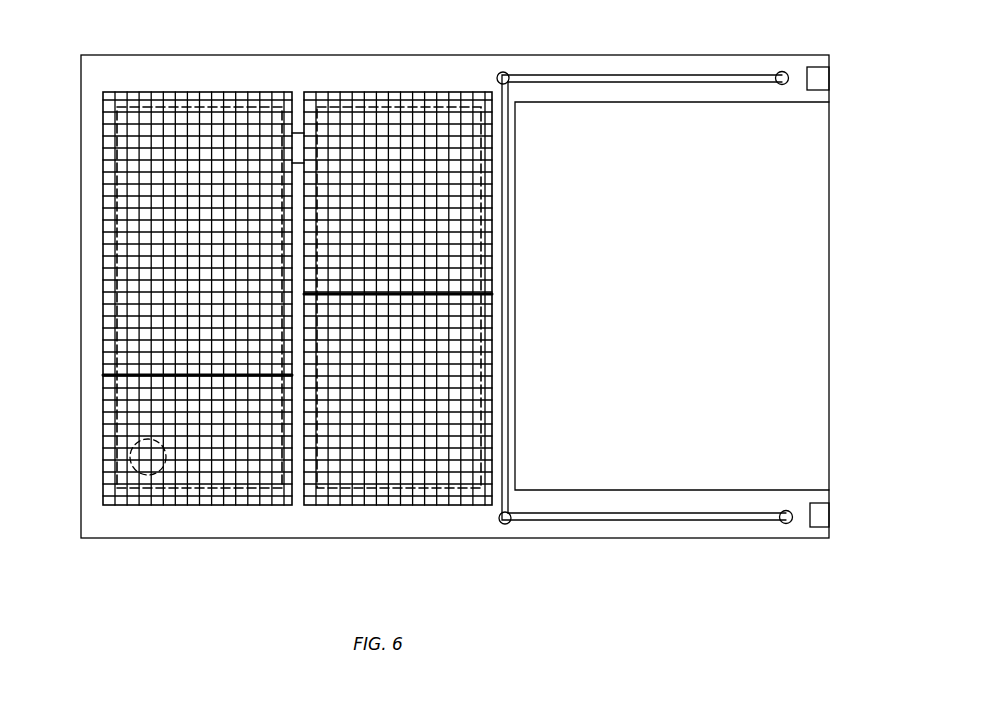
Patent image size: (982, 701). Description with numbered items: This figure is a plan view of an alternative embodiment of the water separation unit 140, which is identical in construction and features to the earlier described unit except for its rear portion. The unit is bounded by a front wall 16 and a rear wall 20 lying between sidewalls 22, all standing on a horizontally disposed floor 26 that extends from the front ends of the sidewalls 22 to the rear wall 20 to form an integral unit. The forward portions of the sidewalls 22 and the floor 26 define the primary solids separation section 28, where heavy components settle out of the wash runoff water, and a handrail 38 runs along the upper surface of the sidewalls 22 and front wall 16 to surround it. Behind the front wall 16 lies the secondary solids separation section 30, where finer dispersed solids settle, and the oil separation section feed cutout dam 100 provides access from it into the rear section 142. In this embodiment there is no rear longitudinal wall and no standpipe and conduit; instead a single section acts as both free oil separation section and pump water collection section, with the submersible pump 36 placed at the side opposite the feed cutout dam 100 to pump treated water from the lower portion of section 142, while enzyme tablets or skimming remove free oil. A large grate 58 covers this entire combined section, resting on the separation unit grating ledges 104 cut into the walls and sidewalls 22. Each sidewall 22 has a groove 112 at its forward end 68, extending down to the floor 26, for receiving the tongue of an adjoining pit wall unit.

The front wall 16 is at (515, 192).
The rear wall 20 is at (80, 300).
The sidewalls 22 is at (205, 68).
The floor 26 is at (827, 82).
The primary solids separation section 28 is at (737, 305).
The secondary solids separation section 30 is at (337, 463).
The submersible pump 36 is at (165, 463).
The handrail 38 is at (660, 77).
The large grate 58 is at (252, 112).
The forward end 68 is at (830, 95).
The oil separation section feed cutout dam 100 is at (300, 148).
The separation unit grating ledges 104 is at (123, 100).
The groove 112 is at (805, 70).
The water separation unit 140 is at (458, 566).
The section 142 is at (137, 398).